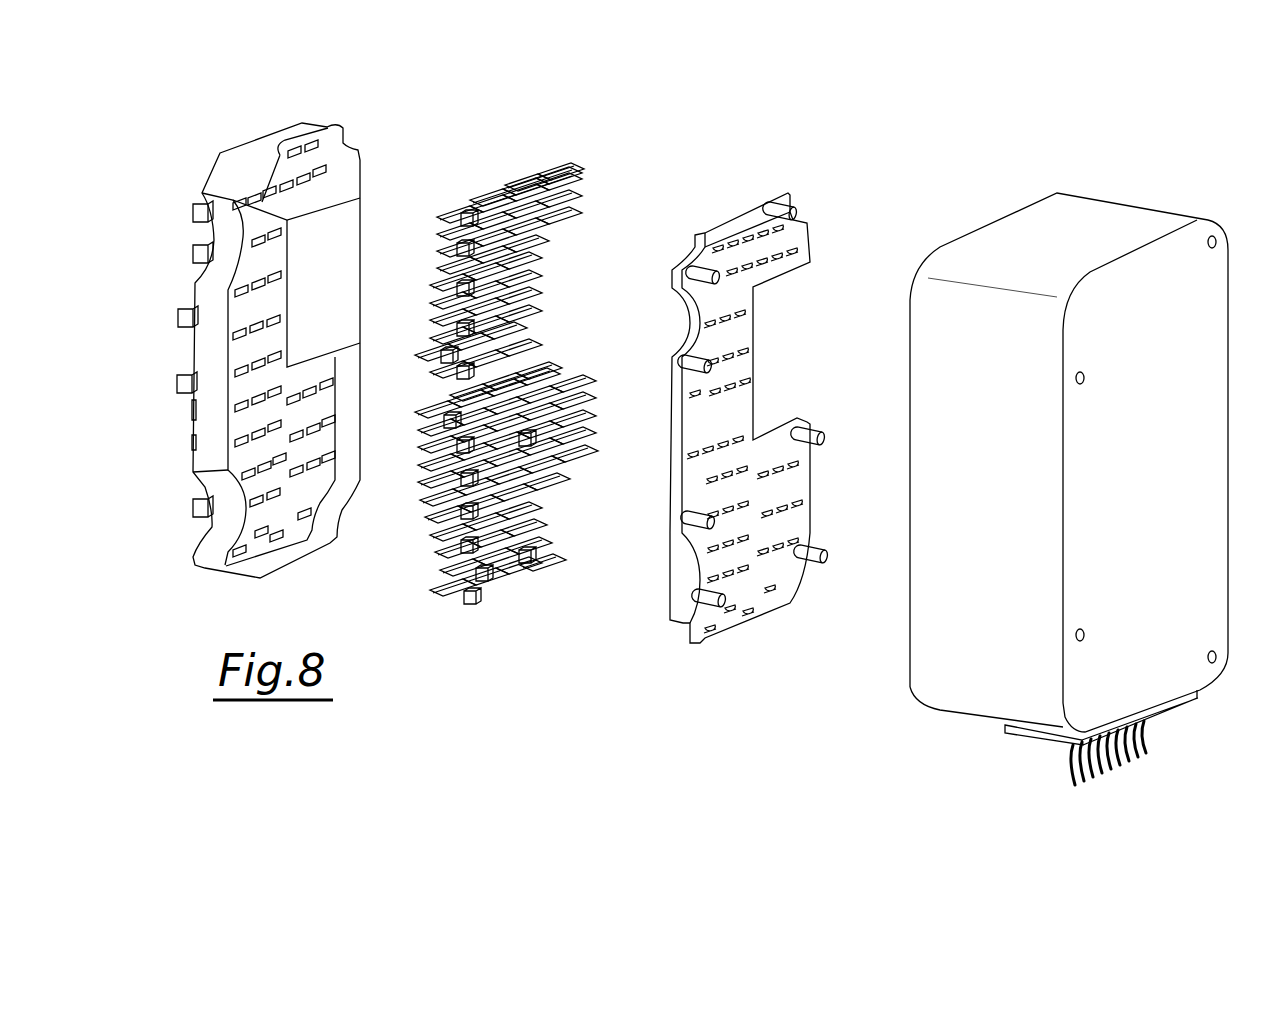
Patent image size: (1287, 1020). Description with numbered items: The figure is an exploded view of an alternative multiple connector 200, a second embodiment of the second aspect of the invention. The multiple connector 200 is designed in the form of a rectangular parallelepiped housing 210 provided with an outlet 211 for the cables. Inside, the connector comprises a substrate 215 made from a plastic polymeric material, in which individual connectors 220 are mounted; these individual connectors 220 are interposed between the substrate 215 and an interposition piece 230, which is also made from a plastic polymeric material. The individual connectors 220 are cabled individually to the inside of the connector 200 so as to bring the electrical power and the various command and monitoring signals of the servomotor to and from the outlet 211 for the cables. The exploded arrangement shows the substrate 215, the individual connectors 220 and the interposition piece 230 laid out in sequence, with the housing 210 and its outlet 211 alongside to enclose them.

The multiple connector 200 is at (148, 118).
The substrate 215 is at (286, 134).
The individual connectors 220 is at (550, 162).
The interposition piece 230 is at (743, 210).
The housing 210 is at (1127, 219).
The outlet for the cables 211 is at (1200, 692).